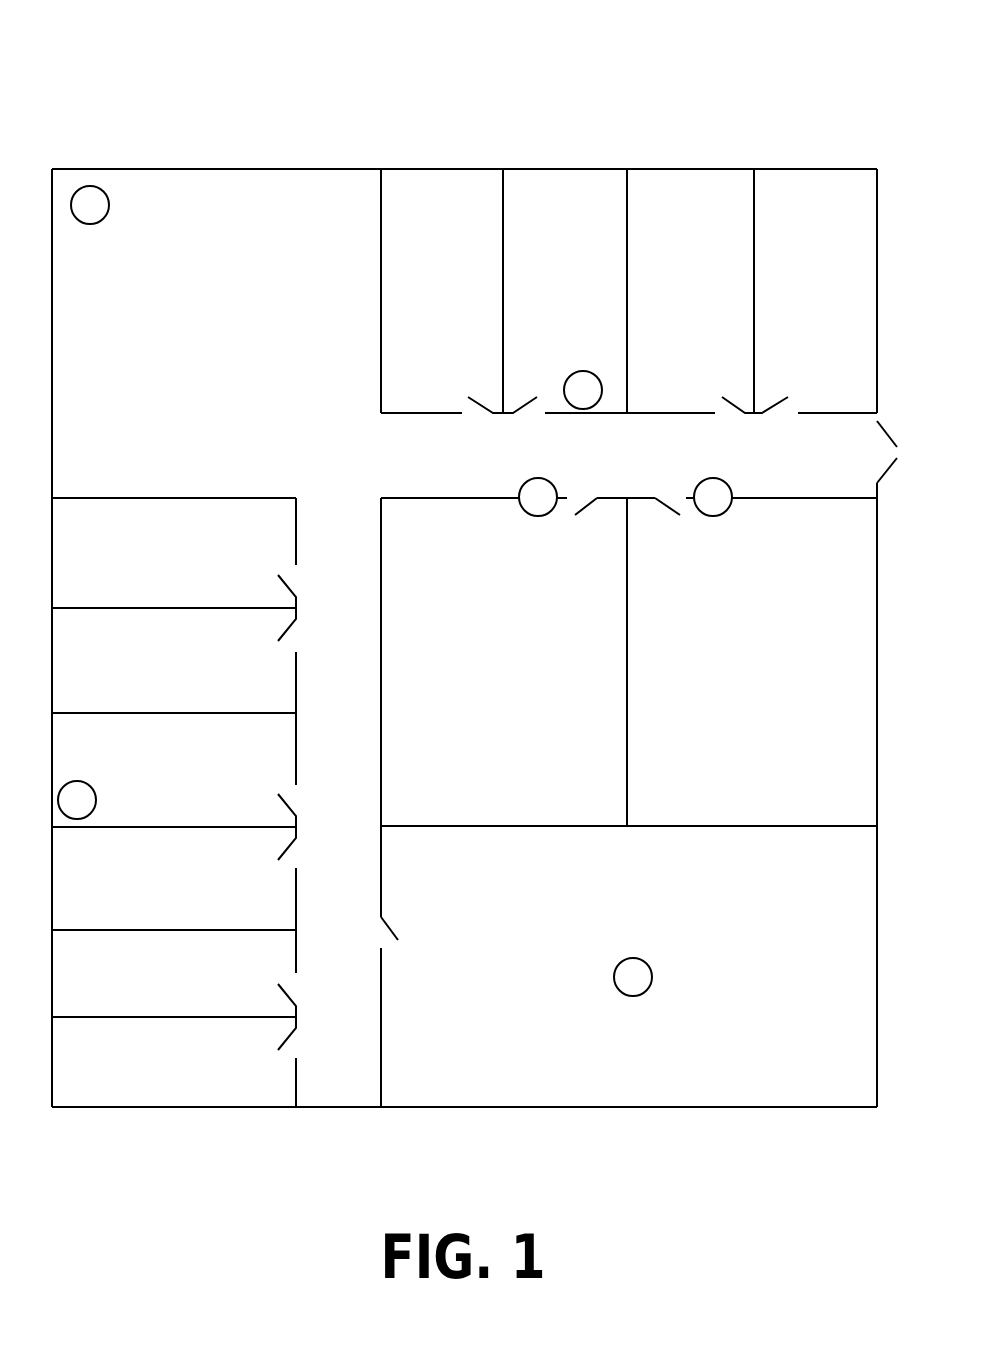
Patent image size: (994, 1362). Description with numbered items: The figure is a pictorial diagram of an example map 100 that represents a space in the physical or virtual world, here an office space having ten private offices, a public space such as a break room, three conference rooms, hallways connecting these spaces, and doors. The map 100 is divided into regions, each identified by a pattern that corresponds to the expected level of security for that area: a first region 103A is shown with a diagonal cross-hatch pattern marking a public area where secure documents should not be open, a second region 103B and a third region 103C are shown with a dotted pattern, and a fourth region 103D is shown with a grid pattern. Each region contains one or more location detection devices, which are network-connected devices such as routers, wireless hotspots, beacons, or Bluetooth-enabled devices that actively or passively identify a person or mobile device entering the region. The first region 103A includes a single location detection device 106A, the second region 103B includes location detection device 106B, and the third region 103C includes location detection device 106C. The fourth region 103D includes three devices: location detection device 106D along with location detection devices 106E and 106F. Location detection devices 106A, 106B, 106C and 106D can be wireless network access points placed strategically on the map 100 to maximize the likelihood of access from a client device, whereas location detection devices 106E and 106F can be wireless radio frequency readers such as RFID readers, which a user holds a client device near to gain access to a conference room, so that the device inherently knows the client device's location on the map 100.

The map 100 is at (388, 110).
The first region 103A is at (125, 148).
The second region 103B is at (650, 148).
The third region 103C is at (236, 1127).
The fourth region 103D is at (763, 1127).
The location detection device 106A is at (109, 211).
The location detection device 106B is at (606, 376).
The location detection device 106C is at (102, 786).
The location detection device 106D is at (640, 1001).
The location detection device 106E is at (546, 523).
The location detection device 106F is at (723, 523).